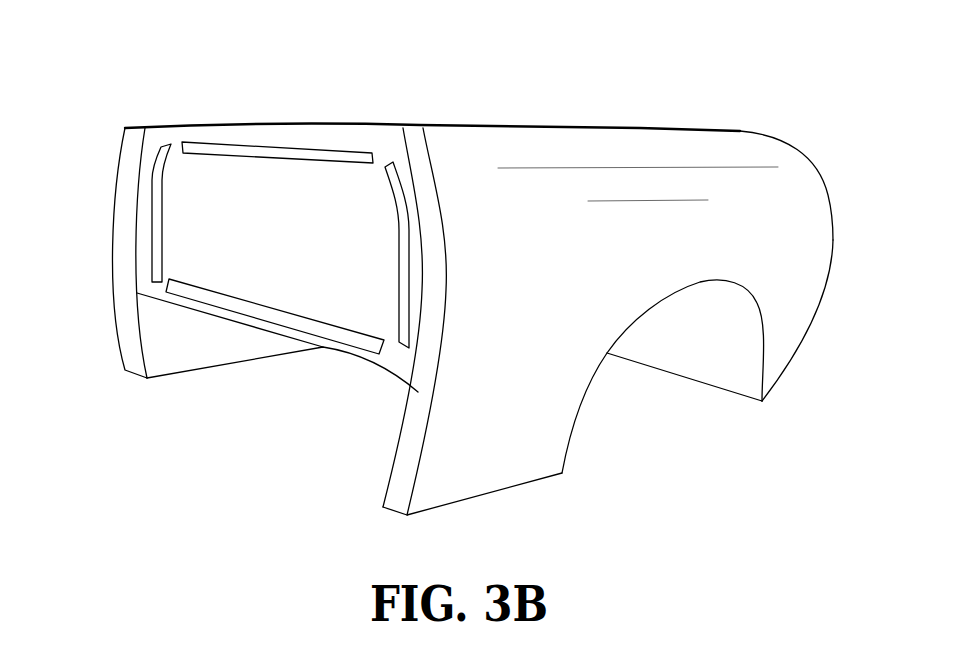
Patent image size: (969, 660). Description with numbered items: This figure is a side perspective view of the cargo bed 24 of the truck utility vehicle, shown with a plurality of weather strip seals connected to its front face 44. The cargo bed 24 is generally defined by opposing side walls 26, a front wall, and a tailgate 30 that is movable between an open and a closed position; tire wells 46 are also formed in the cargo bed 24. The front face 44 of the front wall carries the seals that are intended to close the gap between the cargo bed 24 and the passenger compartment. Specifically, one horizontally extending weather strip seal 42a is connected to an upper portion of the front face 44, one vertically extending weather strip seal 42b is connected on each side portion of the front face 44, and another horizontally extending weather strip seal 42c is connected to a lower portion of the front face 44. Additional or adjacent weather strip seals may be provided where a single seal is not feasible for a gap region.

The cargo bed 24 is at (772, 111).
The side walls 26 is at (133, 128).
The tailgate 30 is at (832, 240).
The horizontally extending weather strip seal 42a is at (310, 150).
The vertically extending weather strip seal 42b is at (157, 205).
The horizontally extending weather strip seal 42c is at (275, 315).
The front face 44 is at (185, 238).
The tire wells 46 is at (703, 365).